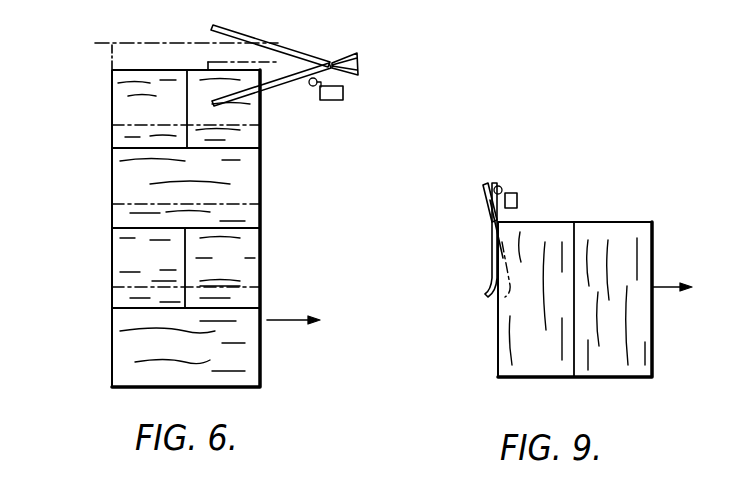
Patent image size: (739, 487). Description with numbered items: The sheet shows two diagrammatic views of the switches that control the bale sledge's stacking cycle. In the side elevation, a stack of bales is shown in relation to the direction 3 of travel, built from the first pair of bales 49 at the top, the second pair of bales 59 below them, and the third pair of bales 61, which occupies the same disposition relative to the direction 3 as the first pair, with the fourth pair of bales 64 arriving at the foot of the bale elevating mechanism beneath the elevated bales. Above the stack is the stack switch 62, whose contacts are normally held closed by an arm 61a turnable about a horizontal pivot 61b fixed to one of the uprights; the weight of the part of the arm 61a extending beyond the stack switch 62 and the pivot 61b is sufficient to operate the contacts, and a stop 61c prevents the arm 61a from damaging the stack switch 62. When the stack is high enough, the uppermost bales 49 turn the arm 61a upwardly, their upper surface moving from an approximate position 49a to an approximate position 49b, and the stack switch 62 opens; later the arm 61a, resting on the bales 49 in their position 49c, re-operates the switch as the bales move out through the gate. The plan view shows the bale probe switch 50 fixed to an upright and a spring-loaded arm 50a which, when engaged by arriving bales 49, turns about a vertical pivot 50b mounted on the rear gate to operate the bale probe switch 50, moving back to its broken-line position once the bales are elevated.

In FIG. 6, the first pair of bales 49 is at (140, 148).
In FIG. 9, the first pair of bales 49 is at (538, 350).
In FIG. 6, the approximate position of upper surface of bales 49a is at (112, 148).
In FIG. 6, the approximate position of upper surface of bales 49b is at (100, 42).
In FIG. 6, the position of bales 49c is at (112, 70).
In FIG. 6, the second pair of bales 59 is at (250, 219).
In FIG. 6, the third pair of bales 61 is at (150, 271).
In FIG. 6, the fourth pair of bales 64 is at (240, 362).
In FIG. 6, the arm 61a is at (287, 84).
In FIG. 6, the horizontal pivot 61b is at (332, 62).
In FIG. 6, the stop 61c is at (351, 56).
In FIG. 6, the stack switch 62 is at (343, 93).
In FIG. 9, the bale probe switch 50 is at (516, 195).
In FIG. 9, the spring-loaded arm 50a is at (491, 238).
In FIG. 9, the vertical pivot 50b is at (487, 205).
In FIG. 6, the direction 3 is at (293, 304).
In FIG. 9, the direction 3 is at (672, 272).